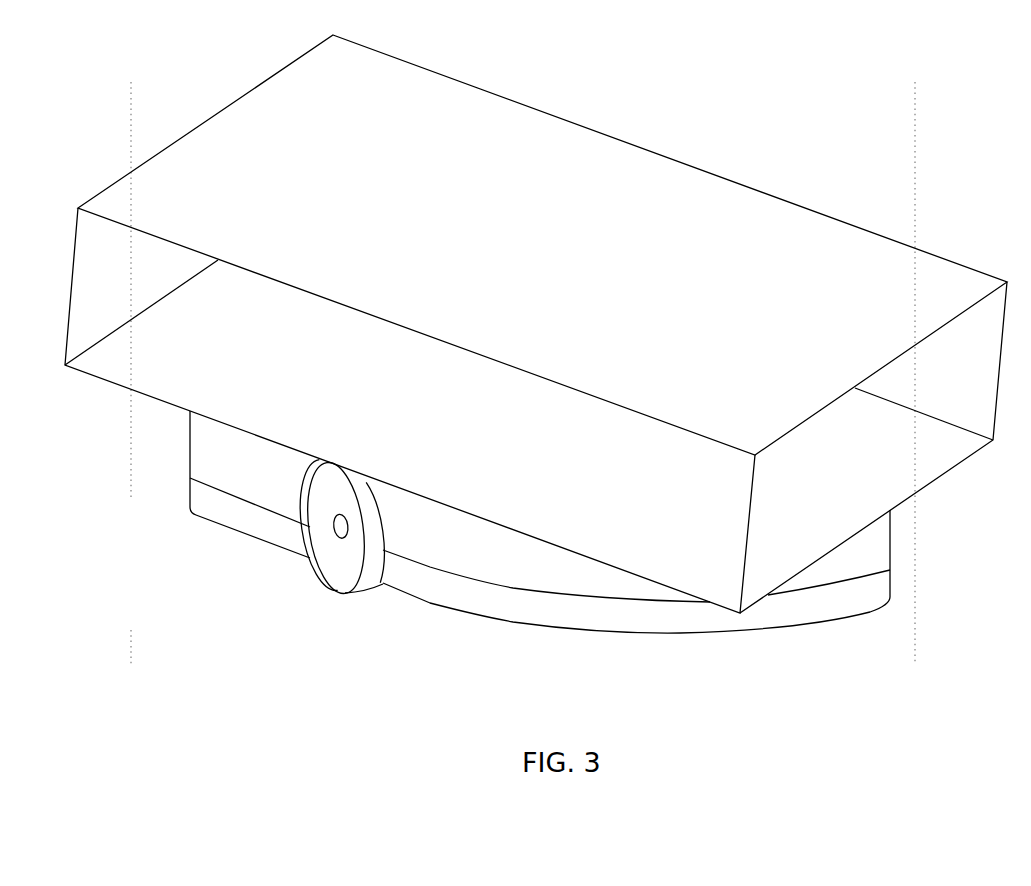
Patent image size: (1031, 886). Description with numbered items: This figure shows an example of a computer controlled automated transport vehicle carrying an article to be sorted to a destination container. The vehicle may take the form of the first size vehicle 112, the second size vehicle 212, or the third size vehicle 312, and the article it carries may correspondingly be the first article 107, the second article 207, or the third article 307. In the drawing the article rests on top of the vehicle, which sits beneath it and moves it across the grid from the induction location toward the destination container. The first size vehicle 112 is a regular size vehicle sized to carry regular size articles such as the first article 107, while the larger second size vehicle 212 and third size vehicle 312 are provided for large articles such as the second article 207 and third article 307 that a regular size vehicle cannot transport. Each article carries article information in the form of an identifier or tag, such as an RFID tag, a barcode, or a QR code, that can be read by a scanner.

The first article 107 is at (536, 324).
The second article 207 is at (536, 324).
The third article 307 is at (645, 150).
The first size vehicle 112 is at (540, 524).
The second size vehicle 212 is at (540, 524).
The third size vehicle 312 is at (452, 553).